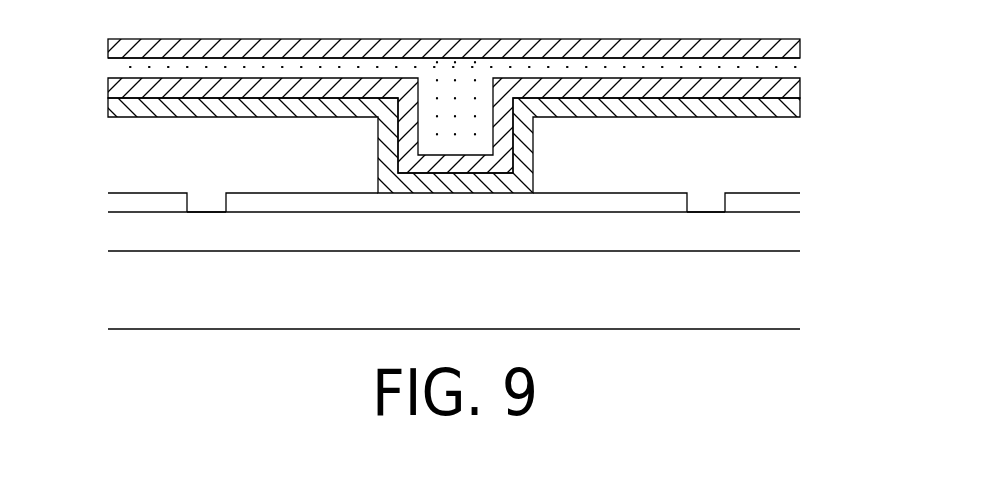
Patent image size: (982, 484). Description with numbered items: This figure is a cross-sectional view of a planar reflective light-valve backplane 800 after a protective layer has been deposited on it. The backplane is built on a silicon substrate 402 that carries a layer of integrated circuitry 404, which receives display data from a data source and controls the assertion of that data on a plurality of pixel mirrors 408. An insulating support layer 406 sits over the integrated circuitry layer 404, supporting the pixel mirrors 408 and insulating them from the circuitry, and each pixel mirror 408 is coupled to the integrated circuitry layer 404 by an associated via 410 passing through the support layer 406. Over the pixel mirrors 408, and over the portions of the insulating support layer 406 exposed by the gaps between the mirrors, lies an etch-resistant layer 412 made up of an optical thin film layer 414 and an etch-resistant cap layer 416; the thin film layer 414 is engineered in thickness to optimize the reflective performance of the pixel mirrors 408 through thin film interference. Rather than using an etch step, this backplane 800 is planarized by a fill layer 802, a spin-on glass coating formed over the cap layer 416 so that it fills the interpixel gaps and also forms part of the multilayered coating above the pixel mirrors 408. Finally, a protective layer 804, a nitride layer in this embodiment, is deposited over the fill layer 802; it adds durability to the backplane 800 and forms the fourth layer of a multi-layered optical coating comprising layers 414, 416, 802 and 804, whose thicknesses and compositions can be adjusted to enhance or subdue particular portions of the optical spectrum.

The planar reflective backplane 800 is at (460, 240).
The protective layer 804 is at (797, 45).
The fill layer 802 is at (797, 68).
The etch-resistant layer 412 is at (457, 135).
The etch-resistant cap layer 416 is at (793, 87).
The optical thin film layer 414 is at (793, 107).
The pixel mirror 408 is at (118, 162).
The via 410 is at (207, 202).
The insulating support layer 406 is at (793, 200).
The integrated circuitry layer 404 is at (793, 230).
The silicon substrate 402 is at (793, 290).